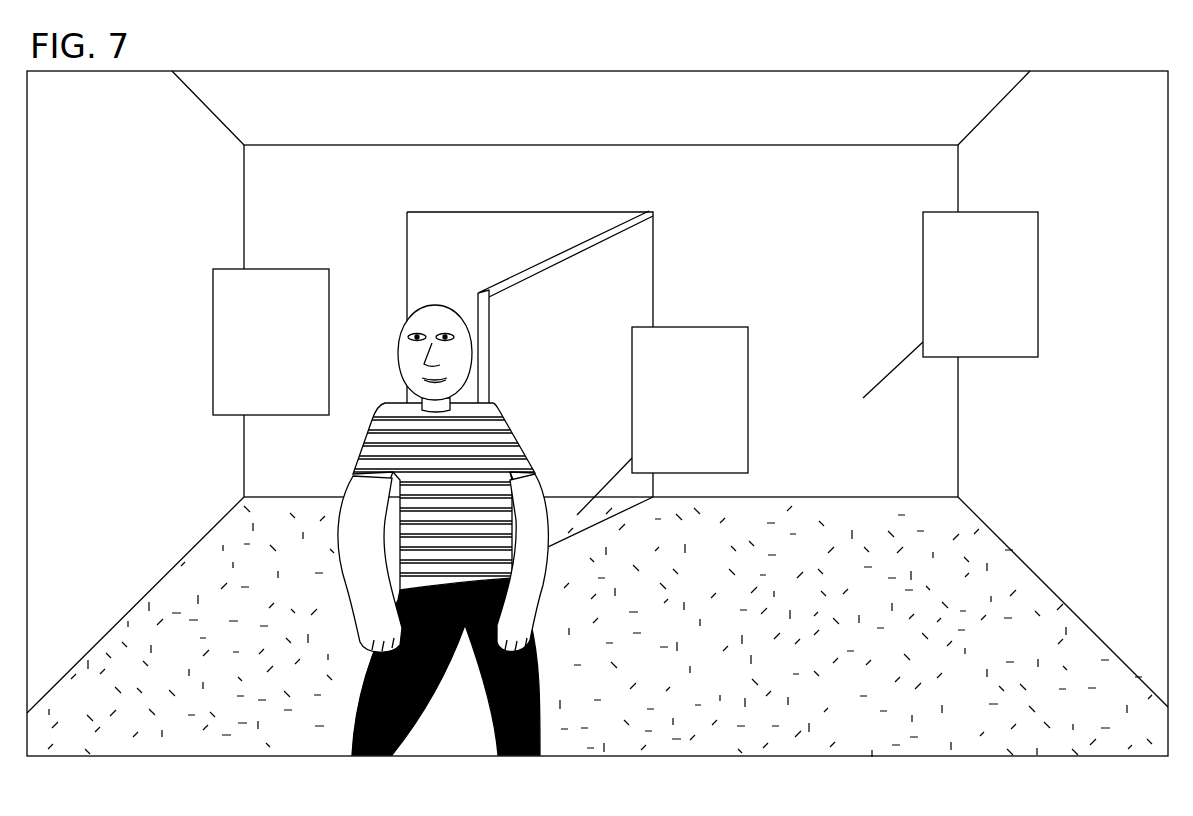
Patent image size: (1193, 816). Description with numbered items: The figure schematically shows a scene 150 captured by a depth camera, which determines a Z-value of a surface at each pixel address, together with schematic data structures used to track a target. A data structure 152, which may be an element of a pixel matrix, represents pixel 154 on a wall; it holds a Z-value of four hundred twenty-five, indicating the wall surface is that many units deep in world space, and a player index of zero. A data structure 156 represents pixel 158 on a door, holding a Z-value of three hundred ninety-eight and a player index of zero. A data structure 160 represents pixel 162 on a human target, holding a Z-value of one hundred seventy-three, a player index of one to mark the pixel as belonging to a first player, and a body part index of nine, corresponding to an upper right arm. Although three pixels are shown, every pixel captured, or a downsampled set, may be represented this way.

The scene 150 is at (877, 123).
The data structure 152 is at (1017, 211).
The pixel 154 is at (862, 394).
The data structure 156 is at (727, 326).
The pixel 158 is at (577, 510).
The data structure 160 is at (303, 268).
The pixel 162 is at (329, 400).